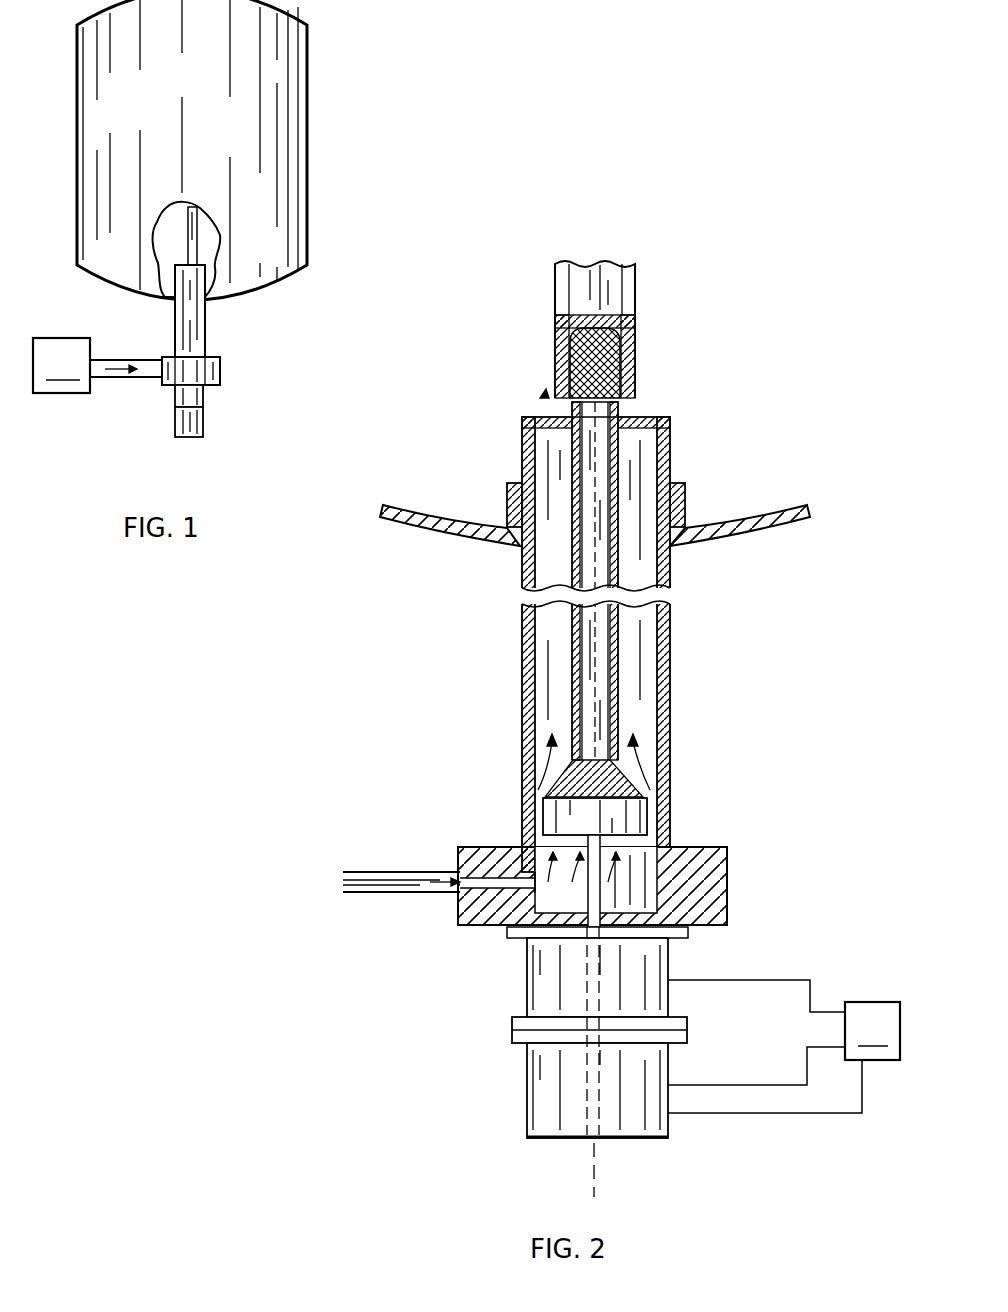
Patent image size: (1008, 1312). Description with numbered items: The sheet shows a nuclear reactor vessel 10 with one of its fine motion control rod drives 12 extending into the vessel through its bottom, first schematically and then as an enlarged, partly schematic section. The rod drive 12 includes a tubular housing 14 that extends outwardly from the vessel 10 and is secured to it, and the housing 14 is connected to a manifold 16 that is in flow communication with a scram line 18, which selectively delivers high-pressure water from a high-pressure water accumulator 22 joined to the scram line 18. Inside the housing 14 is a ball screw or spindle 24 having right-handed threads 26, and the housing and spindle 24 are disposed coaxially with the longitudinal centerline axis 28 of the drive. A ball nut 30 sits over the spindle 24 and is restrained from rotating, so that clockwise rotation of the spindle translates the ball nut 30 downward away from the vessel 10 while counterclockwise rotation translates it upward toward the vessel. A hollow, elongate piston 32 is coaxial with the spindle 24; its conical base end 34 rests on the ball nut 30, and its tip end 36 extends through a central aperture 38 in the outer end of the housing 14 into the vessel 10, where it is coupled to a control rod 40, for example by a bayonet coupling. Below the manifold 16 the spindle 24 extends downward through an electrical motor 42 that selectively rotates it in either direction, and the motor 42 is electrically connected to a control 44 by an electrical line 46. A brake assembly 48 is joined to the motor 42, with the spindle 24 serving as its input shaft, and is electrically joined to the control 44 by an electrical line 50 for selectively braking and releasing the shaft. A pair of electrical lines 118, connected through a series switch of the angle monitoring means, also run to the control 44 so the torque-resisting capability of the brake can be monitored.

In FIG. 1, the nuclear reactor vessel 10 is at (307, 83).
In FIG. 2, the nuclear reactor vessel 10 is at (414, 522).
In FIG. 1, the fine motion control rod drive 12 is at (206, 323).
In FIG. 2, the fine motion control rod drive 12 is at (610, 644).
In FIG. 2, the tubular housing 14 is at (522, 670).
In FIG. 1, the manifold 16 is at (220, 372).
In FIG. 2, the manifold 16 is at (716, 845).
In FIG. 1, the scram line 18 is at (124, 382).
In FIG. 2, the scram line 18 is at (387, 871).
In FIG. 1, the high-pressure water accumulator 22 is at (61, 365).
In FIG. 2, the spindle 24 is at (597, 901).
In FIG. 2, the right-handed threads 26 is at (522, 847).
In FIG. 2, the longitudinal centerline axis 28 is at (596, 1173).
In FIG. 2, the ball nut 30 is at (650, 811).
In FIG. 2, the piston 32 is at (622, 711).
In FIG. 2, the conical base end 34 is at (628, 783).
In FIG. 1, the tip end 36 is at (207, 255).
In FIG. 2, the tip end 36 is at (614, 367).
In FIG. 2, the central aperture 38 is at (620, 413).
In FIG. 1, the control rod 40 is at (199, 220).
In FIG. 2, the control rod 40 is at (637, 283).
In FIG. 1, the electrical motor 42 is at (208, 393).
In FIG. 2, the electrical motor 42 is at (527, 960).
In FIG. 2, the control 44 is at (872, 1031).
In FIG. 2, the electrical line 46 is at (755, 980).
In FIG. 1, the brake assembly 48 is at (207, 422).
In FIG. 2, the brake assembly 48 is at (527, 1090).
In FIG. 2, the electrical line 50 is at (742, 1085).
In FIG. 2, the electrical lines 118 is at (753, 1115).